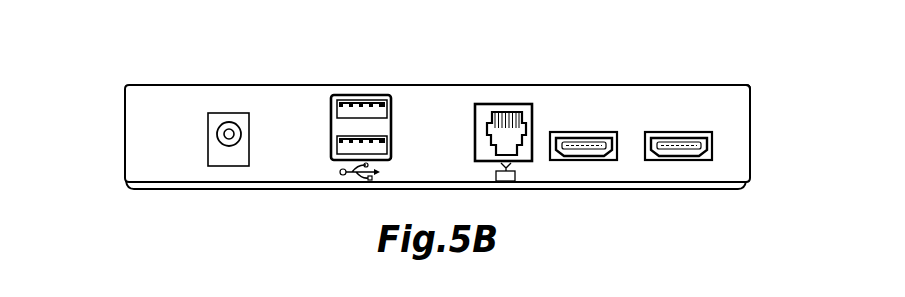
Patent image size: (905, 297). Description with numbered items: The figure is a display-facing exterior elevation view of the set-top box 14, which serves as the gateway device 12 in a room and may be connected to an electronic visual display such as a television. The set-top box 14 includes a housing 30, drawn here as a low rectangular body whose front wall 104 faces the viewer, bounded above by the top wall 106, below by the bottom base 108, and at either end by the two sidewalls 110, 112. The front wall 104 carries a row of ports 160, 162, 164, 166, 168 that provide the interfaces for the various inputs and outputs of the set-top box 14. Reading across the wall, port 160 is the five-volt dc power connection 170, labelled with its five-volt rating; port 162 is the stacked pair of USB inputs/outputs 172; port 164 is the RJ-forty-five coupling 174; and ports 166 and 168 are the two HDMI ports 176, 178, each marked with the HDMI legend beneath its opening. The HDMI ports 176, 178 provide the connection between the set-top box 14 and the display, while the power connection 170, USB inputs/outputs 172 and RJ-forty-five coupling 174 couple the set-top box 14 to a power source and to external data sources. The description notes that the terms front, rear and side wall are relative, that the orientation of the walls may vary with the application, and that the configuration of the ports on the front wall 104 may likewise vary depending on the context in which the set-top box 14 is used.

The gateway device 12 is at (436, 131).
The set-top box 14 is at (137, 191).
The housing 30 is at (723, 78).
The front wall 104 is at (180, 182).
The top wall 106 is at (195, 84).
The bottom base 108 is at (285, 191).
The sidewall 110 is at (125, 134).
The sidewall 112 is at (750, 133).
The port 160 is at (241, 118).
The port 162 is at (360, 95).
The port 164 is at (507, 111).
The port 166 is at (582, 132).
The port 168 is at (677, 133).
The 5V dc power connection 170 is at (227, 162).
The USB inputs/outputs 172 is at (340, 156).
The RJ-45 coupling 174 is at (522, 153).
The HDMI port 176 is at (613, 161).
The HDMI port 178 is at (707, 161).